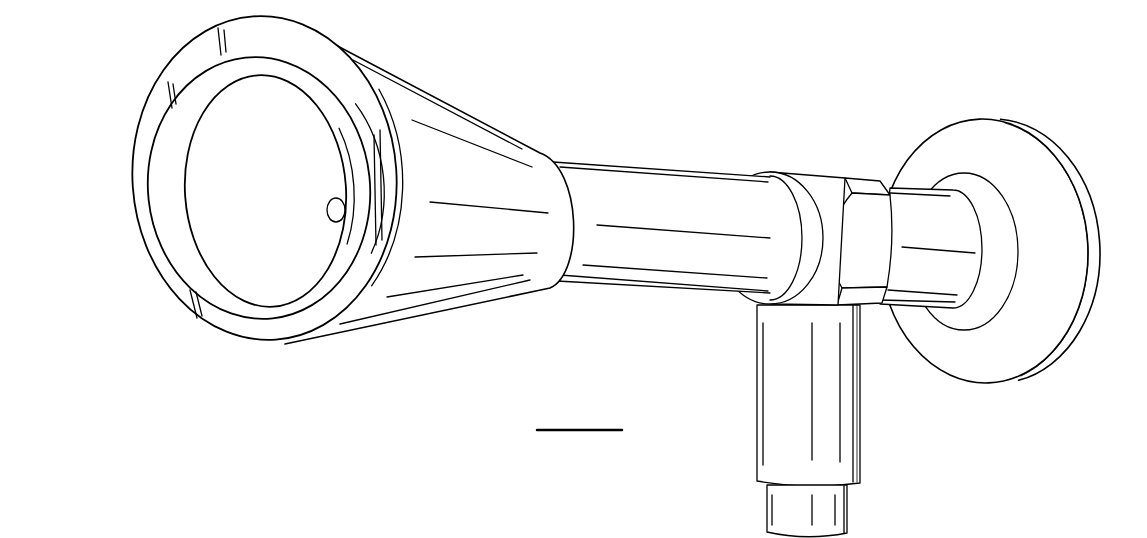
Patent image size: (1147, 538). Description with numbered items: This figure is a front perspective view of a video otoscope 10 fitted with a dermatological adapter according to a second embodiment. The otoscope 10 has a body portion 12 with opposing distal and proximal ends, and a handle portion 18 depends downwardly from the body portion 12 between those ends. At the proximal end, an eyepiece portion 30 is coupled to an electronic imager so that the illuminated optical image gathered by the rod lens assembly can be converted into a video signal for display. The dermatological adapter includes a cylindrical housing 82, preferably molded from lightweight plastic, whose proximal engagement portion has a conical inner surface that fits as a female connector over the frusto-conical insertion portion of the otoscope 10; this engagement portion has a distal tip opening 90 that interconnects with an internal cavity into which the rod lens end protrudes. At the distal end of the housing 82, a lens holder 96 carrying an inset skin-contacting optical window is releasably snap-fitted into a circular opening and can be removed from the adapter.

The video otoscope 10 is at (576, 43).
The body portion 12 is at (627, 174).
The handle portion 18 is at (838, 392).
The eyepiece portion 30 is at (1045, 364).
The cylindrical housing 82 is at (412, 106).
The distal tip opening 90 is at (329, 214).
The lens holder 96 is at (162, 112).